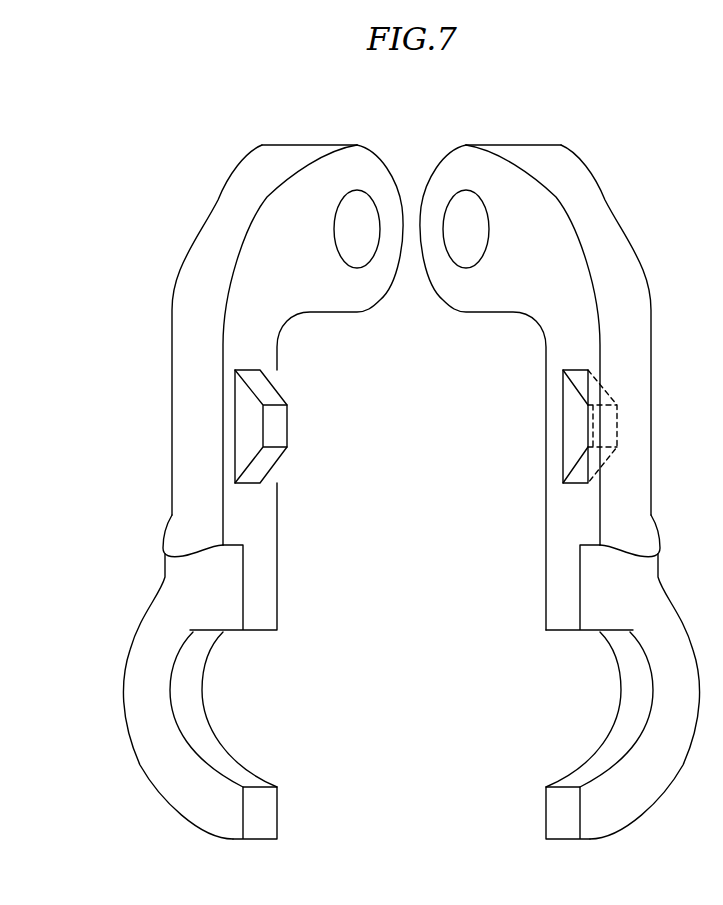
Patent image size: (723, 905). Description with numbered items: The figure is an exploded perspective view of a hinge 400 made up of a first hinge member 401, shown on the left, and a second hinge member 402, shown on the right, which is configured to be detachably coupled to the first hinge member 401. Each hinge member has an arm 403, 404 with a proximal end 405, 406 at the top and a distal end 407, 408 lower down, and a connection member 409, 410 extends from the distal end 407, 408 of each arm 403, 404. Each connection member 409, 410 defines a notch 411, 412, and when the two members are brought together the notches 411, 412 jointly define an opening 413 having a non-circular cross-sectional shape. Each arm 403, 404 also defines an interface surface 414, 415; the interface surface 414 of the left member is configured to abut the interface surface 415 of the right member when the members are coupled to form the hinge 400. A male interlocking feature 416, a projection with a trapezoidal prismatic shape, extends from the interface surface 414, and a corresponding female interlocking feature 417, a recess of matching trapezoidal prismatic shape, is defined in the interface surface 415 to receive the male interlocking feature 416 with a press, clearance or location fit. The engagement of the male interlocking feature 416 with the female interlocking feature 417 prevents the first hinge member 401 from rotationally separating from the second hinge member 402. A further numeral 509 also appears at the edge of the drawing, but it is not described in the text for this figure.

The hinge 400 is at (121, 97).
The first hinge member 401 is at (335, 562).
The second hinge member 402 is at (515, 505).
The arm 403 is at (234, 322).
The arm 404 is at (619, 298).
The proximal end 405 is at (303, 155).
The proximal end 406 is at (523, 155).
The distal end 407 is at (184, 571).
The distal end 408 is at (630, 598).
The connection member 409 is at (163, 648).
The connection member 410 is at (647, 633).
The notch 411 is at (255, 696).
The notch 412 is at (527, 706).
The opening 413 is at (373, 808).
The interface surface 414 is at (330, 300).
The interface surface 415 is at (532, 297).
The male interlocking feature 416 is at (270, 393).
The female interlocking feature 417 is at (572, 443).
The gripping surface 509 is at (722, 650).